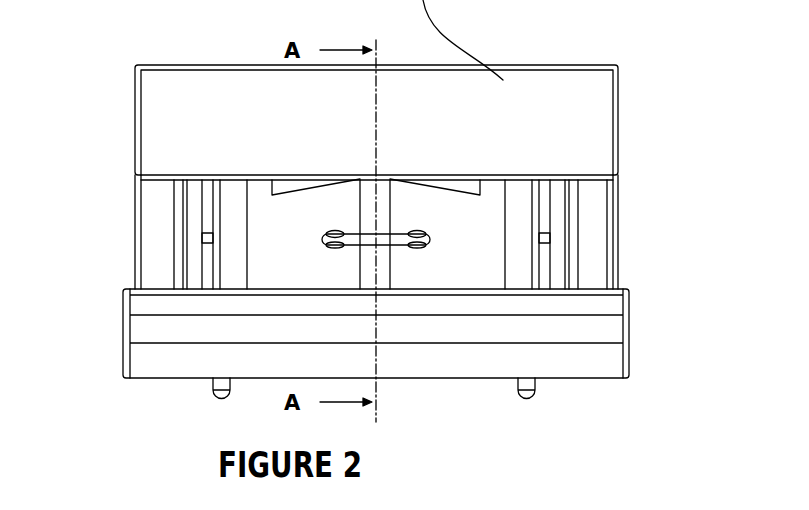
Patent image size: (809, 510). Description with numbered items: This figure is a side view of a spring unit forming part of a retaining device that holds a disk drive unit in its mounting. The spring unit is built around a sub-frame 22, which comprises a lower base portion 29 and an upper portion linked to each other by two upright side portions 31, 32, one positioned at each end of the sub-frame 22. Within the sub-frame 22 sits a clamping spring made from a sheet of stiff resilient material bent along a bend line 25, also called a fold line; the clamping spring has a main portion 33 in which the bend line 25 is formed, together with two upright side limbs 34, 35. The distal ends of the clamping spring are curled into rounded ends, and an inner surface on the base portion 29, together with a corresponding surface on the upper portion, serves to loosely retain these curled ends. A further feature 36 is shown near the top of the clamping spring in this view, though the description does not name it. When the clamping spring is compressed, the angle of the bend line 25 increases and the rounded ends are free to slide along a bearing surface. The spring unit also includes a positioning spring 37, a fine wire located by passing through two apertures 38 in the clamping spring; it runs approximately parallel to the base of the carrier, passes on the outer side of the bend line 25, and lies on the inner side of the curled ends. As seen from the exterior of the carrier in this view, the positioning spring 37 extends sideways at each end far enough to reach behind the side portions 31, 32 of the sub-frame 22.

The sub-frame 22 is at (550, 393).
The bend line 25 is at (387, 278).
The lower base portion 29 is at (593, 363).
The upright side portion 31 is at (150, 212).
The upright side portion 32 is at (607, 273).
The main portion 33 is at (260, 272).
The upright side limb 34 is at (236, 185).
The upright side limb 35 is at (567, 217).
The lens shaped guide 36 is at (414, 190).
The positioning spring 37 is at (548, 222).
The apertures 38 is at (325, 232).